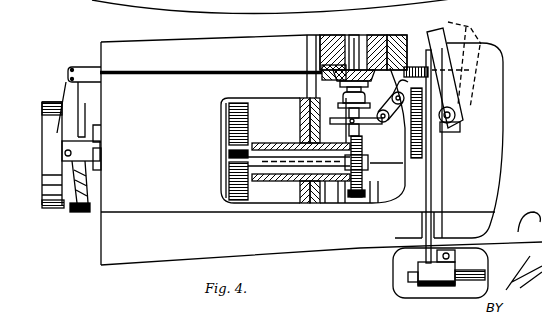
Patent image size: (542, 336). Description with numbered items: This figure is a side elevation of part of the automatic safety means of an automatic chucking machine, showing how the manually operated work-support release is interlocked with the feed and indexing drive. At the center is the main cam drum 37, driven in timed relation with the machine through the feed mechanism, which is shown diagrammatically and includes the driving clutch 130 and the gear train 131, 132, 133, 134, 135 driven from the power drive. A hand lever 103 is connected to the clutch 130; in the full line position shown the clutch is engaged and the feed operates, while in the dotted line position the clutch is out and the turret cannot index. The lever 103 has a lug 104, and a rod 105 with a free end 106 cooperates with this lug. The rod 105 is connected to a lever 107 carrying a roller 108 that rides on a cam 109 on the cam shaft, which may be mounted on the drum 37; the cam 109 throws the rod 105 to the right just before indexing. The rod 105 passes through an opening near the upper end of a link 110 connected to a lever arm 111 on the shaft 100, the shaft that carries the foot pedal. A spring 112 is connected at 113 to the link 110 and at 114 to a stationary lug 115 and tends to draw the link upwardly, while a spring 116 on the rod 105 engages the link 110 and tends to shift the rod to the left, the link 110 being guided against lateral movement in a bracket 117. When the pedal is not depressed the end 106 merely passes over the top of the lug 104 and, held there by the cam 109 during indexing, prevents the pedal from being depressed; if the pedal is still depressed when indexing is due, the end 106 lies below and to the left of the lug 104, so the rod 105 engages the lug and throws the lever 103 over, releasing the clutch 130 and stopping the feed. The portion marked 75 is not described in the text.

The machine frame arc 75 is at (400, 0).
The shaft 100 is at (478, 264).
The hand lever 103 is at (440, 33).
The lug 104 is at (463, 88).
The rod 105 is at (218, 71).
The free end 106 is at (445, 70).
The lever 107 is at (67, 91).
The roller 108 is at (56, 210).
The cam 109 is at (79, 214).
The link 110 is at (432, 197).
The lever arm 111 is at (420, 279).
The spring 112 is at (415, 138).
The connection point on link 113 is at (420, 152).
The connection point on lug 114 is at (392, 109).
The stationary lug 115 is at (373, 37).
The spring 116 is at (416, 66).
The bracket 117 is at (460, 106).
The driving clutch 130 is at (333, 68).
The gear of gear train 131 is at (353, 141).
The gear of gear train 132 is at (352, 188).
The gear of gear train 133 is at (278, 168).
The gear of gear train 134 is at (233, 163).
The gear of gear train 135 is at (248, 130).
The main cam drum 37 is at (224, 133).